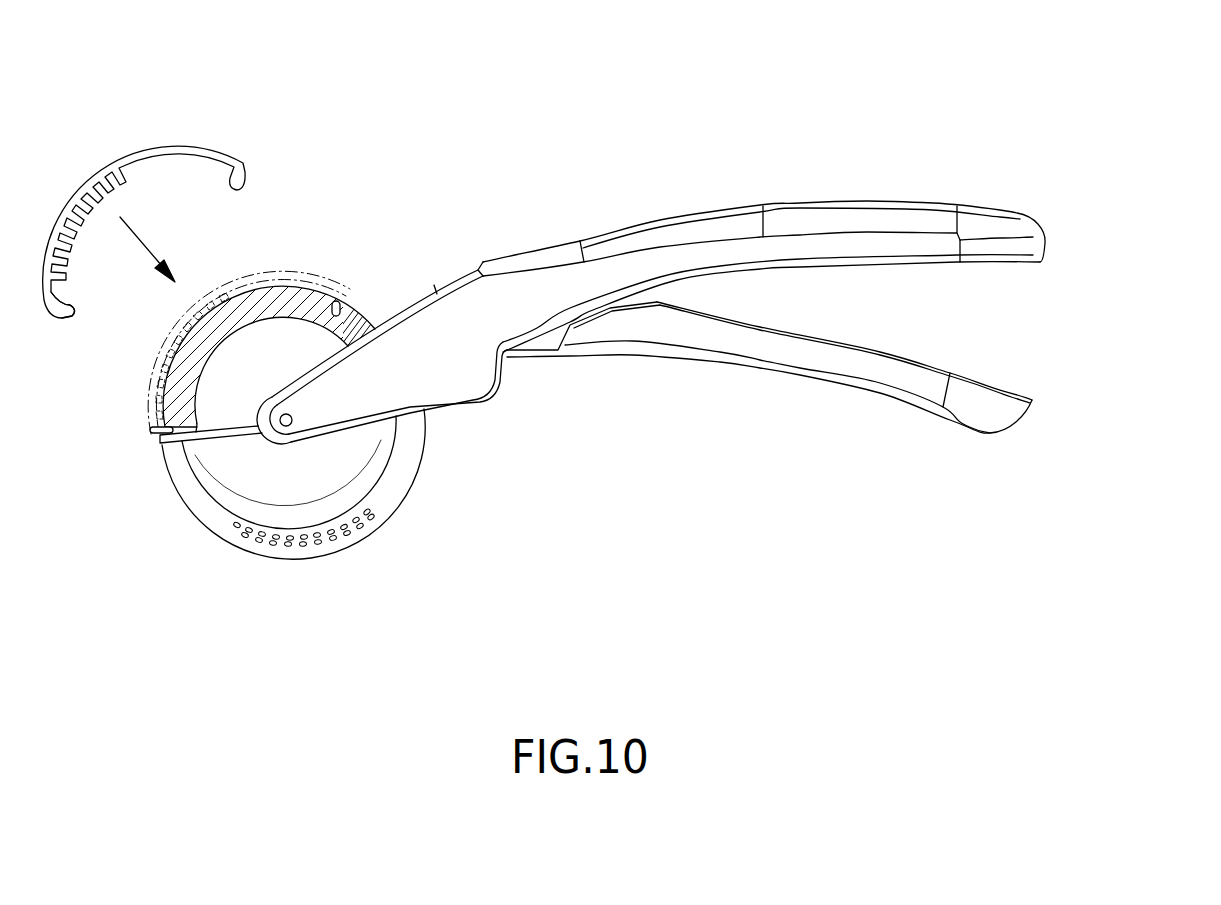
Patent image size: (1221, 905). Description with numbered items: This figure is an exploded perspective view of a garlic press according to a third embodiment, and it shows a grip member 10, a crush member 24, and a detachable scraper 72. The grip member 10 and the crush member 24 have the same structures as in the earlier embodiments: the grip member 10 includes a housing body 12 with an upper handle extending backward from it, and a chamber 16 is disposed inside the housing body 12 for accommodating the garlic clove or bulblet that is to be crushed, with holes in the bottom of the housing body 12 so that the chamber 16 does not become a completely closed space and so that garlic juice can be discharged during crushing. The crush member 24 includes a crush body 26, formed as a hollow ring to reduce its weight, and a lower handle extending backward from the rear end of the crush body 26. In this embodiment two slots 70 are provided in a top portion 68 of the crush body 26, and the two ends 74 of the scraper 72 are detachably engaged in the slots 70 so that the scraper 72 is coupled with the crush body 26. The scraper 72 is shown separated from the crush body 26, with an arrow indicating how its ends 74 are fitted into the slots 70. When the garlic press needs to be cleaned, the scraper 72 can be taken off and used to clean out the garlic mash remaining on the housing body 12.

The grip member 10 is at (1080, 235).
The housing body 12 is at (195, 502).
The chamber 16 is at (207, 465).
The crush member 24 is at (1047, 393).
The crush body 26 is at (312, 300).
The top portion 68 is at (263, 288).
The slots 70 is at (338, 302).
The scraper 72 is at (117, 155).
The ends 74 is at (70, 318).